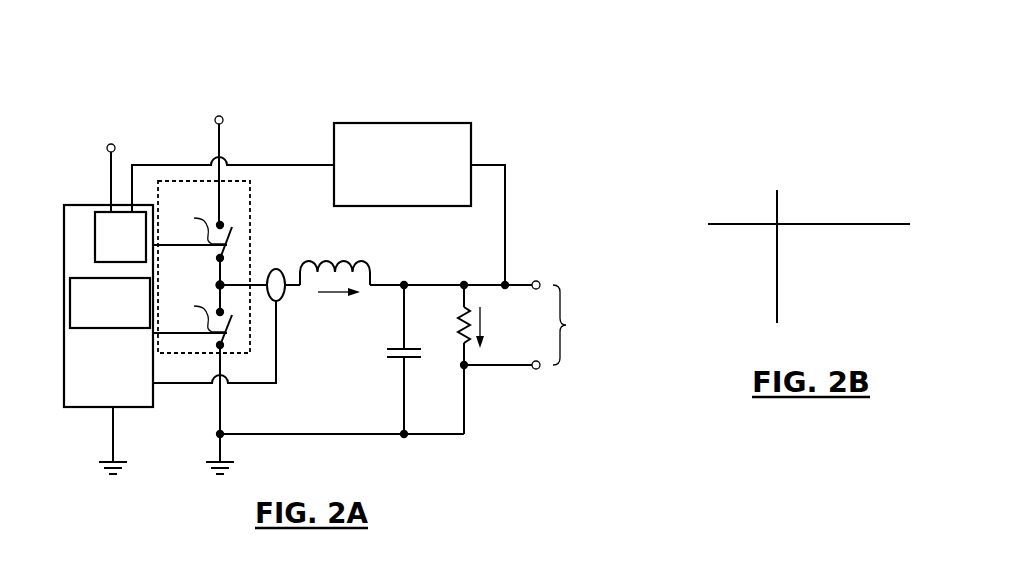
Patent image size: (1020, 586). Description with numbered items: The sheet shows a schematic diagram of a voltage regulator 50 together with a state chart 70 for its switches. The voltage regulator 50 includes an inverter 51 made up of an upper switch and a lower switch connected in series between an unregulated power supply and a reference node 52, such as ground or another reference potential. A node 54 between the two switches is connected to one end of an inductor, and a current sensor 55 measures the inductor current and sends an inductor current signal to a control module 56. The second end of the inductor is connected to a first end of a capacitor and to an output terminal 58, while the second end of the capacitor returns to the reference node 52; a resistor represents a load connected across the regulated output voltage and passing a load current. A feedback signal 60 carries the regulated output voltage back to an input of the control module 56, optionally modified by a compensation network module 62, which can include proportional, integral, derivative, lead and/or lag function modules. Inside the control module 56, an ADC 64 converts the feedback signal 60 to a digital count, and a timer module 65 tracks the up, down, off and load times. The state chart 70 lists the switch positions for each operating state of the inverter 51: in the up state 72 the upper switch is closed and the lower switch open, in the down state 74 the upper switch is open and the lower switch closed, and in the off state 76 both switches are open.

In FIG. 2A, the voltage regulator 50 is at (110, 40).
In FIG. 2A, the inverter 51 is at (250, 225).
In FIG. 2A, the reference node 52 is at (113, 430).
In FIG. 2A, the node 54 is at (214, 285).
In FIG. 2A, the current sensor 55 is at (284, 300).
In FIG. 2A, the control module 56 is at (82, 407).
In FIG. 2A, the output terminal 58 is at (521, 283).
In FIG. 2A, the feedback signal 60 is at (267, 165).
In FIG. 2A, the compensation network module 62 is at (471, 130).
In FIG. 2A, the ADC 64 is at (95, 232).
In FIG. 2A, the timer module 65 is at (64, 344).
In FIG. 2B, the state chart 70 is at (726, 162).
In FIG. 2B, the up state 72 is at (708, 241).
In FIG. 2B, the down state 74 is at (708, 274).
In FIG. 2B, the off state 76 is at (708, 307).